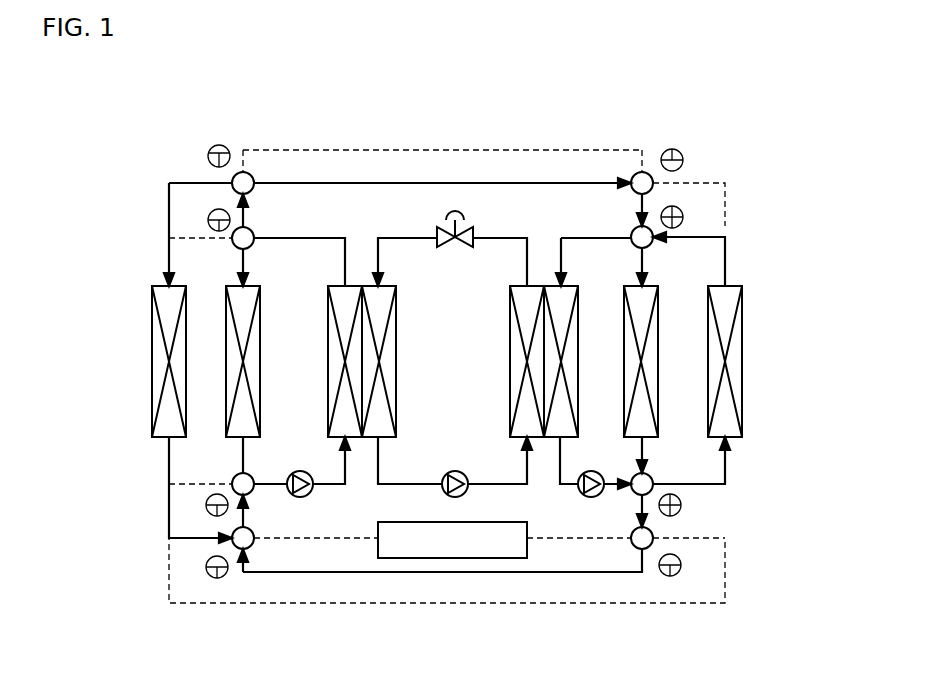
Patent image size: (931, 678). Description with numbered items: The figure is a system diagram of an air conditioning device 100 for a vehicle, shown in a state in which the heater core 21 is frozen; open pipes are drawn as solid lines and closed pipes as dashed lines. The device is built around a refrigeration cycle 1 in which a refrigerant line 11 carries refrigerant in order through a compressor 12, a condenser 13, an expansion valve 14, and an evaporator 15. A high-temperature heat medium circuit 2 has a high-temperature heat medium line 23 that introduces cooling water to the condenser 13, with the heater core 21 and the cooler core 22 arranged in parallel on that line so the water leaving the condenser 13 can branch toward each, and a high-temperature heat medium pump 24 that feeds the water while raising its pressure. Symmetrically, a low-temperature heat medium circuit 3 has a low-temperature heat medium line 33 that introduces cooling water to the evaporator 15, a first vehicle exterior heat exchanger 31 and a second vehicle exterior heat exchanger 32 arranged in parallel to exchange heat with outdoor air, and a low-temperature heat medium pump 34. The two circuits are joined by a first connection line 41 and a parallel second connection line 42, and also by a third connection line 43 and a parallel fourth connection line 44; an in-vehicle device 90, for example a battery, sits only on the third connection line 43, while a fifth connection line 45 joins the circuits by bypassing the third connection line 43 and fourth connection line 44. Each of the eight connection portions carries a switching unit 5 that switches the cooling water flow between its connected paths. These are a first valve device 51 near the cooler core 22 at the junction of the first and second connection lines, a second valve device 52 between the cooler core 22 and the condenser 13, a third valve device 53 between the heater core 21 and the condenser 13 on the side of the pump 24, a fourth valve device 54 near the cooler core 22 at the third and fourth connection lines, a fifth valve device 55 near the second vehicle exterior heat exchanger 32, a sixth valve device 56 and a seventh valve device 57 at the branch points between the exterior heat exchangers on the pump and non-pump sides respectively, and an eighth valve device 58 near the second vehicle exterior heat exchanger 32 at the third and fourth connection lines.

The air conditioning device for the vehicle 100 is at (125, 102).
The refrigeration cycle 1 is at (521, 198).
The high-temperature heat medium circuit 2 is at (790, 204).
The low-temperature heat medium circuit 3 is at (100, 197).
The switching unit 5 is at (457, 345).
The refrigerant line 11 is at (398, 237).
The compressor 12 is at (455, 470).
The condenser 13 is at (546, 437).
The expansion valve 14 is at (452, 248).
The evaporator 15 is at (362, 437).
The heater core 21 is at (742, 313).
The cooler core 22 is at (658, 357).
The high-temperature heat medium line 23 is at (598, 237).
The high-temperature heat medium pump 24 is at (591, 471).
The first vehicle exterior heat exchanger 31 is at (152, 302).
The second vehicle exterior heat exchanger 32 is at (226, 363).
The low-temperature heat medium line 33 is at (273, 485).
The low-temperature heat medium pump 34 is at (300, 471).
The first connection line 41 is at (299, 150).
The second connection line 42 is at (337, 183).
The third connection line 43 is at (597, 538).
The fourth connection line 44 is at (622, 572).
The fifth connection line 45 is at (684, 603).
The first valve device 51 is at (645, 172).
The second valve device 52 is at (652, 243).
The third valve device 53 is at (653, 480).
The fourth valve device 54 is at (653, 543).
The fifth valve device 55 is at (241, 172).
The sixth valve device 56 is at (232, 240).
The seventh valve device 57 is at (232, 480).
The eighth valve device 58 is at (232, 541).
The in-vehicle device 90 is at (485, 558).